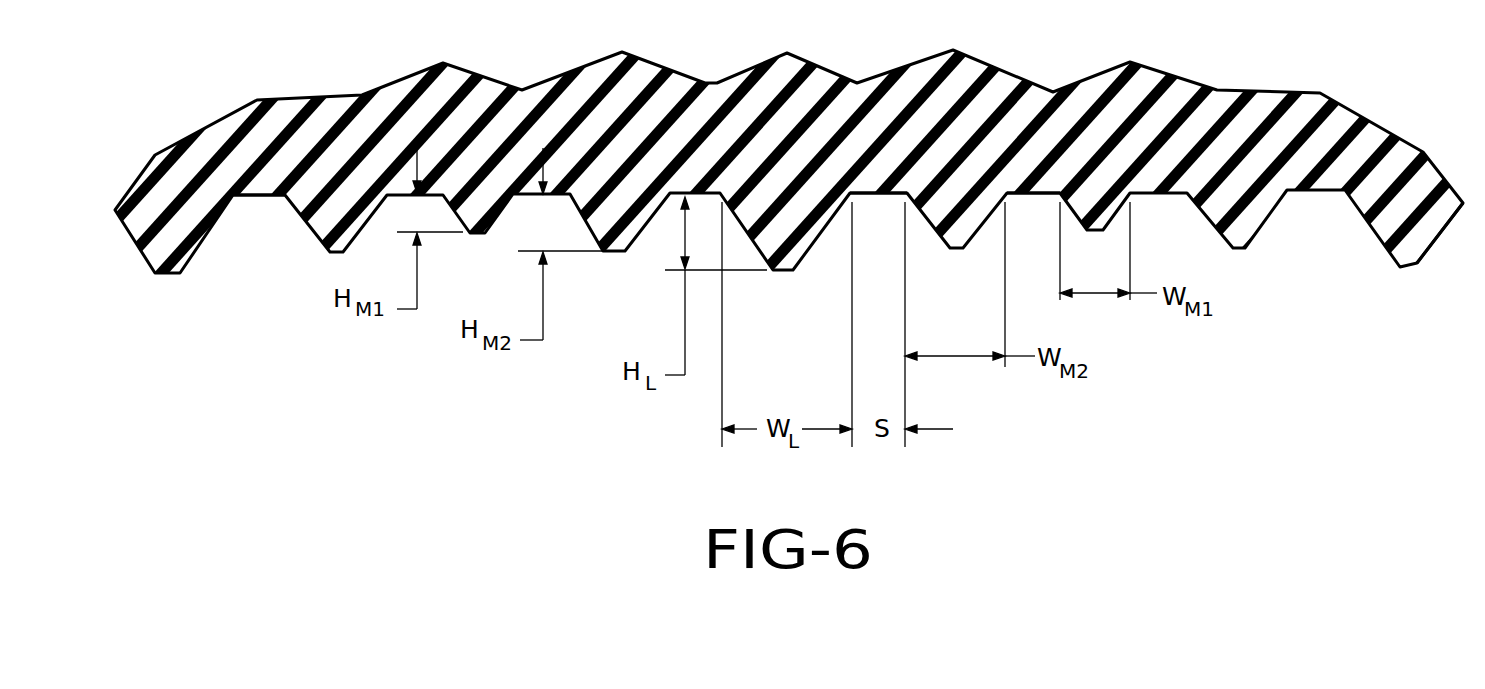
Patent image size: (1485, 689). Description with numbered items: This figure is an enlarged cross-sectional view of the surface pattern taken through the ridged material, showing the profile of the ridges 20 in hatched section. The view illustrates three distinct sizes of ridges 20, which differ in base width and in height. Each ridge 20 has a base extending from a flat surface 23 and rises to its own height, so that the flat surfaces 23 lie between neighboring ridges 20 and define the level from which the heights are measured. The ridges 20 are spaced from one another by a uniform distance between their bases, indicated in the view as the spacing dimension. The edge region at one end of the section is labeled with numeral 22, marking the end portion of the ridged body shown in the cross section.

The ridge 20 is at (203, 243).
The end edge of sheet 22 is at (1434, 214).
The flat surface 23 is at (257, 198).